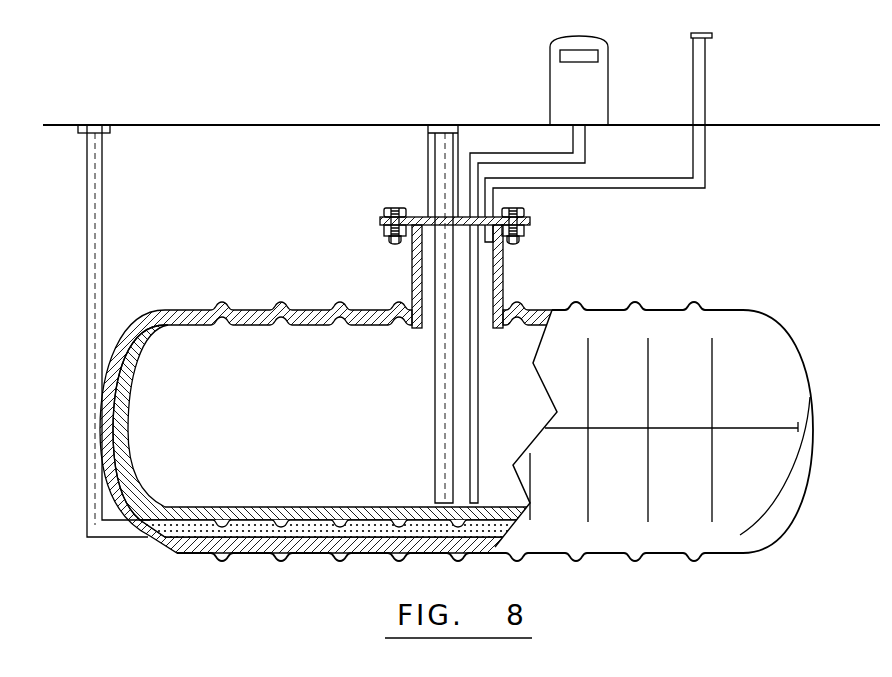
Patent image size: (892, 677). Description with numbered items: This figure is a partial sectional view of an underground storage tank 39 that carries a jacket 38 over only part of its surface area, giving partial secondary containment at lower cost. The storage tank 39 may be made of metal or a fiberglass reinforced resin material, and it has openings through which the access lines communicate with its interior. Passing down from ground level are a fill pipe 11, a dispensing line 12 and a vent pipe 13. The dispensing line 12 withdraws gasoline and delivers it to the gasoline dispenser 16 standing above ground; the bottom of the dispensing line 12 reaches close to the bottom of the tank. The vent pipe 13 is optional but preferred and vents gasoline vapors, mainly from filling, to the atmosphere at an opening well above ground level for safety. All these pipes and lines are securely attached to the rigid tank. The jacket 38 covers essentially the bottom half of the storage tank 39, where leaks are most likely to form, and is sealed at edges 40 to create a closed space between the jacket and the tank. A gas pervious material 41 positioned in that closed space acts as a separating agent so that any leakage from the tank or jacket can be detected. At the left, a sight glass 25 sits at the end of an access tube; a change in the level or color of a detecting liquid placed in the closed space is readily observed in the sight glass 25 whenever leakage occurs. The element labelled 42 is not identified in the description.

The fill pipe 11 is at (428, 153).
The dispensing line 12 is at (585, 148).
The vent pipe 13 is at (705, 77).
The gasoline dispenser 16 is at (550, 52).
The sight glass 25 is at (102, 192).
The jacket 38 is at (777, 497).
The storage tank 39 is at (168, 308).
The edges 40 is at (811, 397).
The gas pervious material 41 is at (180, 517).
The sleeve 42 is at (412, 273).